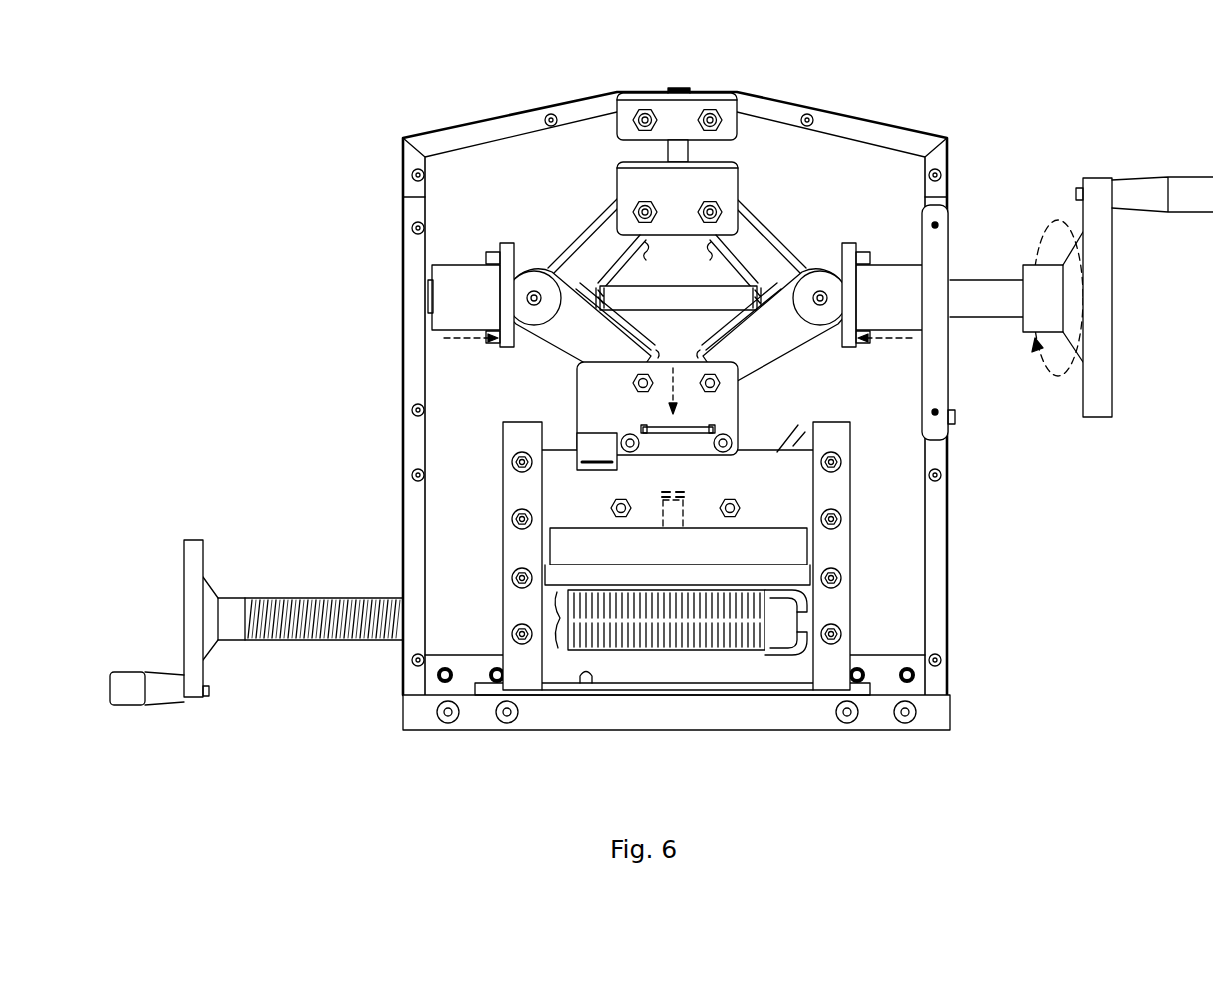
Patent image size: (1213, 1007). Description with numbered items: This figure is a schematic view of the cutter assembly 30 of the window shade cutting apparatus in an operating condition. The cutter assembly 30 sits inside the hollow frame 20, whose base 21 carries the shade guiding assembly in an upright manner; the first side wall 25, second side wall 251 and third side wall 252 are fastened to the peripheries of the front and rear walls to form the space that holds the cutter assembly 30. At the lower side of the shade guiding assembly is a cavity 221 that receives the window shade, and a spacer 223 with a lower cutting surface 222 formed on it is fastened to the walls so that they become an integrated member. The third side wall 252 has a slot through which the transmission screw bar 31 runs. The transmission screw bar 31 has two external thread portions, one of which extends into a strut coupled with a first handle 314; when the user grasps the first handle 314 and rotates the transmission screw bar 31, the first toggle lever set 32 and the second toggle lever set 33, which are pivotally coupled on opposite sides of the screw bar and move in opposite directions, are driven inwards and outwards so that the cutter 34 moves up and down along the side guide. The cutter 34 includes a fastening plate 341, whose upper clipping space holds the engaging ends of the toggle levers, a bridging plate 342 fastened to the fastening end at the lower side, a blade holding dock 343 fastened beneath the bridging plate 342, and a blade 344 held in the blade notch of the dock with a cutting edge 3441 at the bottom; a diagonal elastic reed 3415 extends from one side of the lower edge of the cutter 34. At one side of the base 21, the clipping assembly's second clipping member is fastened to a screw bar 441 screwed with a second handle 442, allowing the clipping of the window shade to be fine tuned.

The hollow frame 20 is at (874, 102).
The base 21 is at (636, 713).
The cavity 221 is at (570, 645).
The lower cutting surface 222 is at (712, 650).
The spacer 223 is at (798, 426).
The first side wall 25 is at (475, 135).
The second side wall 251 is at (415, 325).
The third side wall 252 is at (947, 375).
The cutter assembly 30 is at (788, 210).
The transmission screw bar 31 is at (987, 300).
The first handle 314 is at (1097, 186).
The first toggle lever set 32 is at (568, 219).
The second toggle lever set 33 is at (861, 223).
The cutter 34 is at (560, 503).
The fastening plate 341 is at (722, 403).
The bridging plate 342 is at (690, 440).
The diagonal elastic reed 3415 is at (594, 451).
The blade holding dock 343 is at (787, 497).
The blade 344 is at (787, 552).
The cutting edge 3441 is at (790, 578).
The screw bar 441 is at (310, 600).
The second handle 442 is at (124, 688).